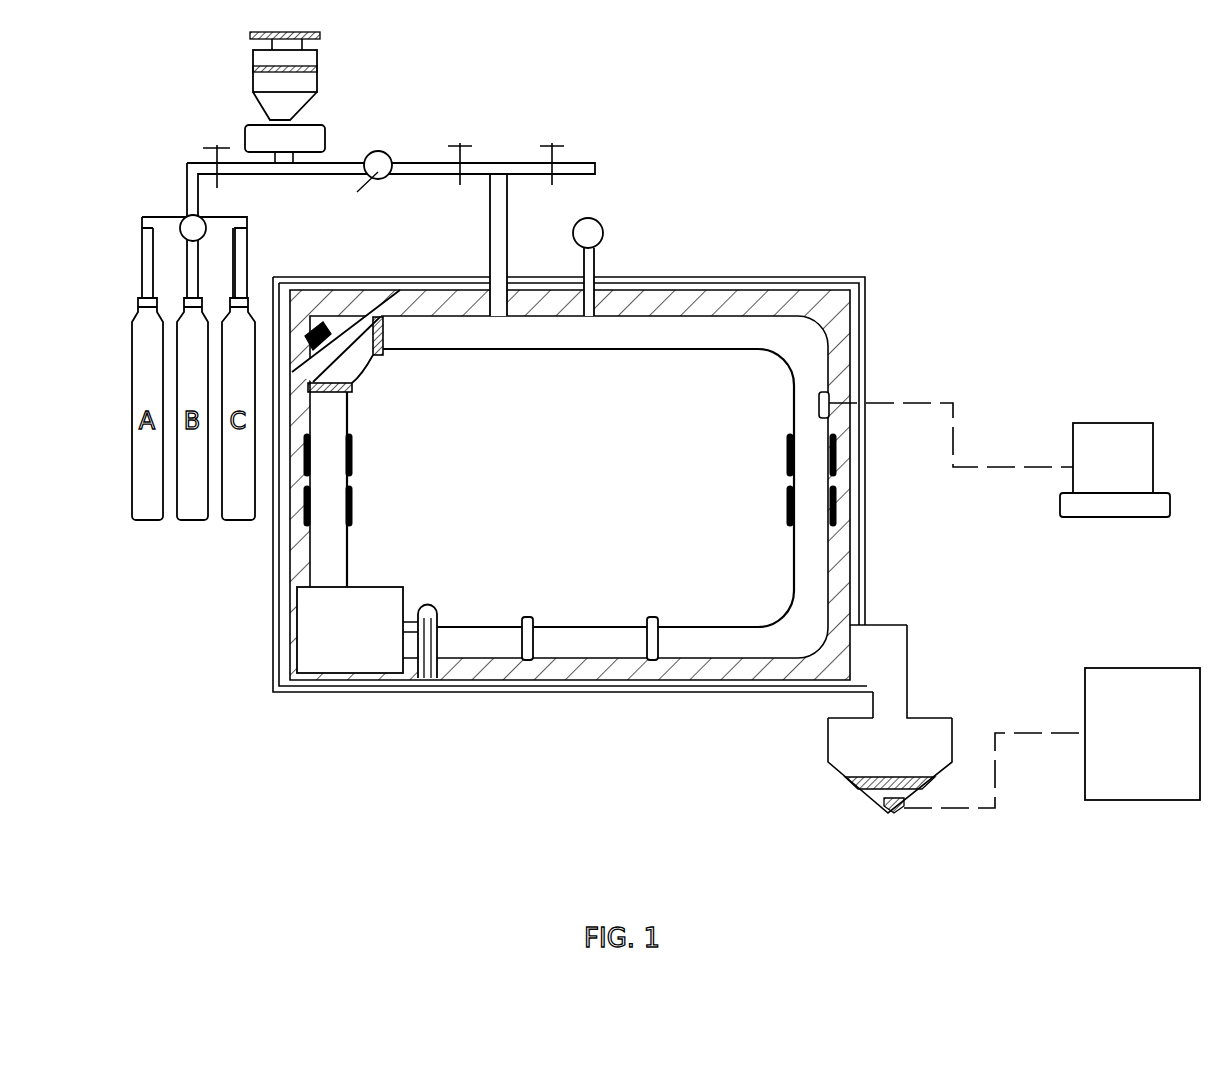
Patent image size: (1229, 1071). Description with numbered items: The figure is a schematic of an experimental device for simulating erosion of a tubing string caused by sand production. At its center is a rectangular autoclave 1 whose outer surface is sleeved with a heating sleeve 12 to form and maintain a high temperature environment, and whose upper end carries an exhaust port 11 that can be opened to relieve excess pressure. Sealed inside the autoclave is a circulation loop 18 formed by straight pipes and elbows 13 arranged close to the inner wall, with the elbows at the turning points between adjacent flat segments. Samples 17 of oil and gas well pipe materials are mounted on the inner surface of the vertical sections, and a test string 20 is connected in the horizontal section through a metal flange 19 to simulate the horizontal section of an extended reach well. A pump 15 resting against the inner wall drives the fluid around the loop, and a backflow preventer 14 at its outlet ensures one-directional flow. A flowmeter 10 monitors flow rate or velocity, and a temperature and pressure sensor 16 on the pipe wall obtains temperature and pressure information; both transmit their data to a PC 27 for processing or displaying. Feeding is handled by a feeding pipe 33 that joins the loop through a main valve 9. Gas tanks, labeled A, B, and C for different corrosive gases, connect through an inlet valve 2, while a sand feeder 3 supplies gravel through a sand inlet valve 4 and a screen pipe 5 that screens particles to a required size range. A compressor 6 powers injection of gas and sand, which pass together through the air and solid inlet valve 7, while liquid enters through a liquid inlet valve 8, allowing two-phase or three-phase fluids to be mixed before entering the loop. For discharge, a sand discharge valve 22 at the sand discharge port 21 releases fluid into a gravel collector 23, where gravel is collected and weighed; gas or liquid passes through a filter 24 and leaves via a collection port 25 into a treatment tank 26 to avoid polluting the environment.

The autoclave 1 is at (317, 317).
The inlet valve 2 is at (213, 143).
The sand feeder 3 is at (287, 120).
The sand inlet valve 4 is at (293, 118).
The screen pipe 5 is at (323, 130).
The compressor 6 is at (393, 152).
The air and solid inlet valve 7 is at (467, 142).
The liquid inlet valve 8 is at (560, 147).
The main valve 9 is at (503, 307).
The flowmeter 10 is at (570, 252).
The exhaust port 11 is at (757, 283).
The heating sleeve 12 is at (358, 275).
The elbows 13 is at (363, 330).
The backflow preventer 14 is at (425, 660).
The pump 15 is at (340, 657).
The temperature and pressure sensor 16 is at (830, 394).
The samples 17 is at (833, 497).
The circulation loop 18 is at (815, 572).
The metal flange 19 is at (528, 650).
The test string 20 is at (597, 645).
The sand discharge port 21 is at (893, 675).
The sand discharge valve 22 is at (823, 628).
The gravel collector 23 is at (840, 737).
The filter 24 is at (848, 785).
The collection port 25 is at (884, 806).
The treatment tank 26 is at (1130, 668).
The PC 27 is at (1090, 425).
The feeding pipe 33 is at (497, 197).